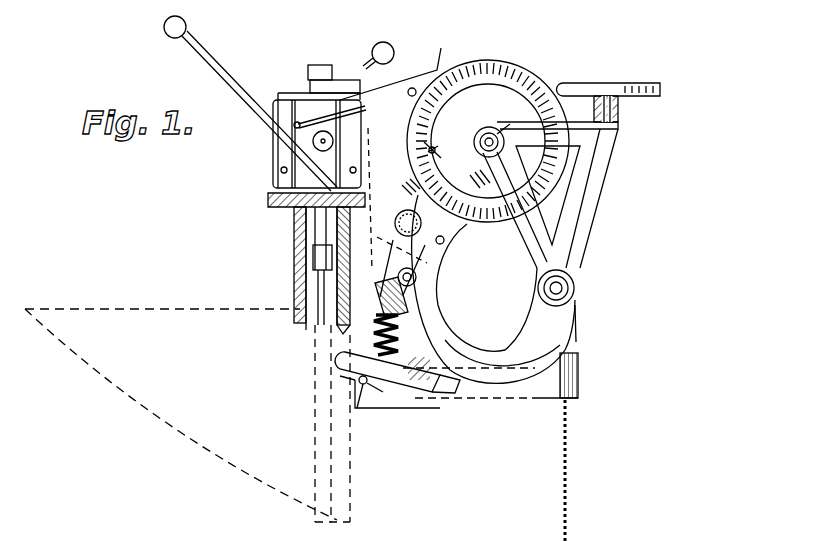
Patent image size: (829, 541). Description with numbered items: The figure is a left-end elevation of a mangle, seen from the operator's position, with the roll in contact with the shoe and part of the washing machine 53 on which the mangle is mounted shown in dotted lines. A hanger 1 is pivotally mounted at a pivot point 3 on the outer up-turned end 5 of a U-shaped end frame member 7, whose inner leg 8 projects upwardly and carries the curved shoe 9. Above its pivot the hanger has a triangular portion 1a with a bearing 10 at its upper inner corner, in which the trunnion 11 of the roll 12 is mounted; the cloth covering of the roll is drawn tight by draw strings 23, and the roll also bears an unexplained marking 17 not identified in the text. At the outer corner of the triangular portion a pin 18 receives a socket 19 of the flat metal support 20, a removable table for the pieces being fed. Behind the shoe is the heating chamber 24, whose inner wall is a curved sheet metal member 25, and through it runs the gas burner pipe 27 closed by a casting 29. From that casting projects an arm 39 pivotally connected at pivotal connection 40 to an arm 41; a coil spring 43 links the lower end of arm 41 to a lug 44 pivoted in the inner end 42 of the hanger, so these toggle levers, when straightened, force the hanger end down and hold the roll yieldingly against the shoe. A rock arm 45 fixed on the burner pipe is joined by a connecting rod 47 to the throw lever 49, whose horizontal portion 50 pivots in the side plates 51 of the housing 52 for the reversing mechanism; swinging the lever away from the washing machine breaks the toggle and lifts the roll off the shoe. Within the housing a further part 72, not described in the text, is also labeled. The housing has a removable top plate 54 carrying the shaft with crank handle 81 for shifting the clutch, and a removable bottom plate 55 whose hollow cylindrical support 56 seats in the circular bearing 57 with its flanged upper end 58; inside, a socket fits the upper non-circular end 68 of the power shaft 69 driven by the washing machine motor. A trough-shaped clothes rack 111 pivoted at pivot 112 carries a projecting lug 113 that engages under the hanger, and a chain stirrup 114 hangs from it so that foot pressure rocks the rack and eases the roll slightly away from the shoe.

The hanger 1 is at (560, 328).
The triangular portion 1a is at (580, 182).
The pivot point 3 is at (574, 288).
The outer up-turned end 5 is at (572, 268).
The end frame member 7 is at (420, 297).
The inner leg 8 is at (432, 256).
The shoe 9 is at (466, 233).
The bearing 10 is at (495, 128).
The trunnion 11 is at (506, 128).
The roll 12 is at (467, 92).
The dial face 17 is at (458, 124).
The pin 18 is at (620, 114).
The socket 19 is at (624, 94).
The flat metal support 20 is at (580, 86).
The draw strings 23 is at (441, 158).
The heating chamber 24 is at (386, 110).
The curved sheet metal member 25 is at (389, 112).
The gas burner pipe 27 is at (455, 243).
The casting 29 is at (497, 286).
The arm 39 is at (398, 236).
The pivotal connection 40 is at (413, 313).
The arm 41 is at (501, 309).
The inner end 42 is at (338, 378).
The coil spring 43 is at (405, 330).
The lug 44 is at (407, 362).
The rock arm 45 is at (340, 353).
The connecting rod 47 is at (305, 143).
The throw lever 49 is at (212, 52).
The horizontal portion 50 is at (320, 120).
The side plate 51 is at (293, 123).
The housing 52 is at (284, 153).
The washing machine 53 is at (186, 307).
The top plate 54 is at (284, 96).
The bottom plate 55 is at (272, 191).
The hollow cylindrical support 56 is at (310, 227).
The circular bearing 57 is at (297, 240).
The flanged upper end 58 is at (287, 212).
The upper non-circular end 68 is at (317, 278).
The power shaft 69 is at (318, 315).
The cam 72 is at (334, 144).
The crank handle 81 is at (389, 55).
The clothes rack 111 is at (545, 400).
The pivot 112 is at (417, 397).
The projecting lug 113 is at (363, 403).
The chain stirrup 114 is at (567, 472).